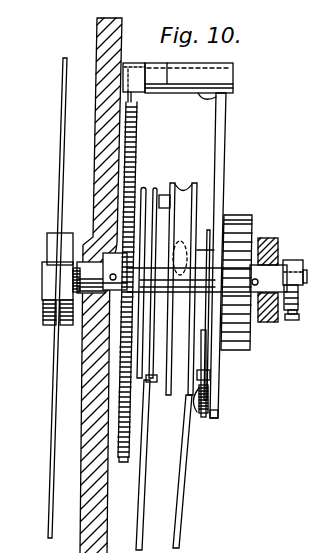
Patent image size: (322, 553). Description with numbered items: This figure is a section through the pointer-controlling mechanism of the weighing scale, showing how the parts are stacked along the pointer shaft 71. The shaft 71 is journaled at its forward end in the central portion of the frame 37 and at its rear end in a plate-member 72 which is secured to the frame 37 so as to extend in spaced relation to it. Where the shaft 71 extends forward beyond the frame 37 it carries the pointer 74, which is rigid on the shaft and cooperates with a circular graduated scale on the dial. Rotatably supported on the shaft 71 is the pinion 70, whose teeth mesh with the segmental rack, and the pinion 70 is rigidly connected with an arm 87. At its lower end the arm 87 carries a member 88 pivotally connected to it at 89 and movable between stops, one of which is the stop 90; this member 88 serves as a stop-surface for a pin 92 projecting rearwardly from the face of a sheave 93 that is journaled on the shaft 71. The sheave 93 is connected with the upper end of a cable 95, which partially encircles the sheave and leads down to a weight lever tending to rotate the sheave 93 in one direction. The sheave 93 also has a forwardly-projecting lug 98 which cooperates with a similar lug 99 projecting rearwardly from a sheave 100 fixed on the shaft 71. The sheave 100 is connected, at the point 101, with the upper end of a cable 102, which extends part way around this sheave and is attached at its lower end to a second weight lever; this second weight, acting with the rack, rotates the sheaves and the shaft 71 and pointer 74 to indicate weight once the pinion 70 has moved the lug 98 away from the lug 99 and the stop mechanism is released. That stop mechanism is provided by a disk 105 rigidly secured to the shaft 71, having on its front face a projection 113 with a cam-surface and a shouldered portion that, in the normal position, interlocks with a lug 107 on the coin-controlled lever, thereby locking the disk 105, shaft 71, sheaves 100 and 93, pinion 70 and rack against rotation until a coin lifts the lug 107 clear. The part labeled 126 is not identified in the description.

The frame 37 is at (107, 41).
The pointer 74 is at (60, 153).
The projection 113 is at (128, 97).
The lug 107 is at (145, 84).
The sheave 100 is at (139, 112).
The disk 105 is at (123, 459).
The bracket 126 is at (228, 103).
The arm 87 is at (224, 157).
The lug 99 is at (151, 186).
The lug 98 is at (168, 192).
The sheave 93 is at (190, 196).
The connection 101 is at (157, 381).
The cable 102 is at (143, 503).
The cable 95 is at (176, 520).
The pinion 70 is at (244, 214).
The shaft 71 is at (268, 272).
The plate-member 72 is at (270, 331).
The pin 92 is at (200, 356).
The stop 90 is at (210, 378).
The pivot 89 is at (216, 403).
The member 88 is at (197, 392).